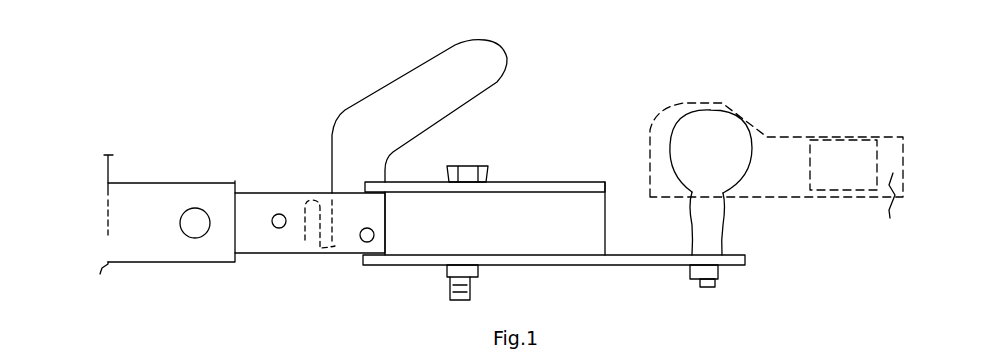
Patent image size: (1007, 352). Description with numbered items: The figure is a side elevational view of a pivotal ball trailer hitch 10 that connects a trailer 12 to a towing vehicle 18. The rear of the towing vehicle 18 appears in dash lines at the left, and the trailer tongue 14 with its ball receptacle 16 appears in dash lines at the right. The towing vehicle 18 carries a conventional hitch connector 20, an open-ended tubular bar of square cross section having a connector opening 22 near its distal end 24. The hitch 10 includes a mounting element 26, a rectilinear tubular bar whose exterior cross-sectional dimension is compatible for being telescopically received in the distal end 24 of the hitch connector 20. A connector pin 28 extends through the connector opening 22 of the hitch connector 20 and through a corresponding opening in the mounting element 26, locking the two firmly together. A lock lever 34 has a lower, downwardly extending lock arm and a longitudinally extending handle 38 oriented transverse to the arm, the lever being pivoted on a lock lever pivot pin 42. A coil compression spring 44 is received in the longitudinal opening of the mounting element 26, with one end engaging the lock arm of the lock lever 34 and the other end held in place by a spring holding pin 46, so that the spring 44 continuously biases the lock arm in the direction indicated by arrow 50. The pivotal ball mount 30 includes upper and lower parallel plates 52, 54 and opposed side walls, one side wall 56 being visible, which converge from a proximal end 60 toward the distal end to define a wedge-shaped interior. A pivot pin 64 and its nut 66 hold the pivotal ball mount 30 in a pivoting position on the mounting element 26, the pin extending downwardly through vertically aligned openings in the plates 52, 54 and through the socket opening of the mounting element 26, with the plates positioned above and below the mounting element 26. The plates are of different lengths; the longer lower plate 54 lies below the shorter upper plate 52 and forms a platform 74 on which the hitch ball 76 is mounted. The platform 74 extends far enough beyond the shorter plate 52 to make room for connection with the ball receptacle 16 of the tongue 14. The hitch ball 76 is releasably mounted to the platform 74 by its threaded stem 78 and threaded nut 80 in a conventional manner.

The hitch 10 is at (604, 68).
The trailer 12 is at (885, 75).
The tongue 14 is at (889, 212).
The ball receptacle 16 is at (755, 117).
The towing vehicle 18 is at (84, 150).
The hitch connector 20 is at (165, 190).
The connector opening 22 is at (182, 236).
The distal end 24 is at (240, 184).
The mounting element 26 is at (252, 244).
The connector pin 28 is at (197, 209).
The pivotal ball mount 30 is at (557, 173).
The lock lever 34 is at (420, 72).
The handle 38 is at (480, 44).
The lock lever pivot pin 42 is at (360, 243).
The coil compression spring 44 is at (290, 238).
The spring holding pin 46 is at (282, 214).
The arrow 50 is at (515, 8).
The upper parallel plate 52 is at (578, 182).
The lower parallel plate 54 is at (647, 266).
The side wall 56 is at (565, 245).
The proximal end 60 is at (375, 266).
The pivot pin 64 is at (468, 168).
The nut 66 is at (447, 272).
The platform 74 is at (660, 255).
The hitch ball 76 is at (718, 122).
The threaded stem 78 is at (698, 284).
The threaded nut 80 is at (717, 270).